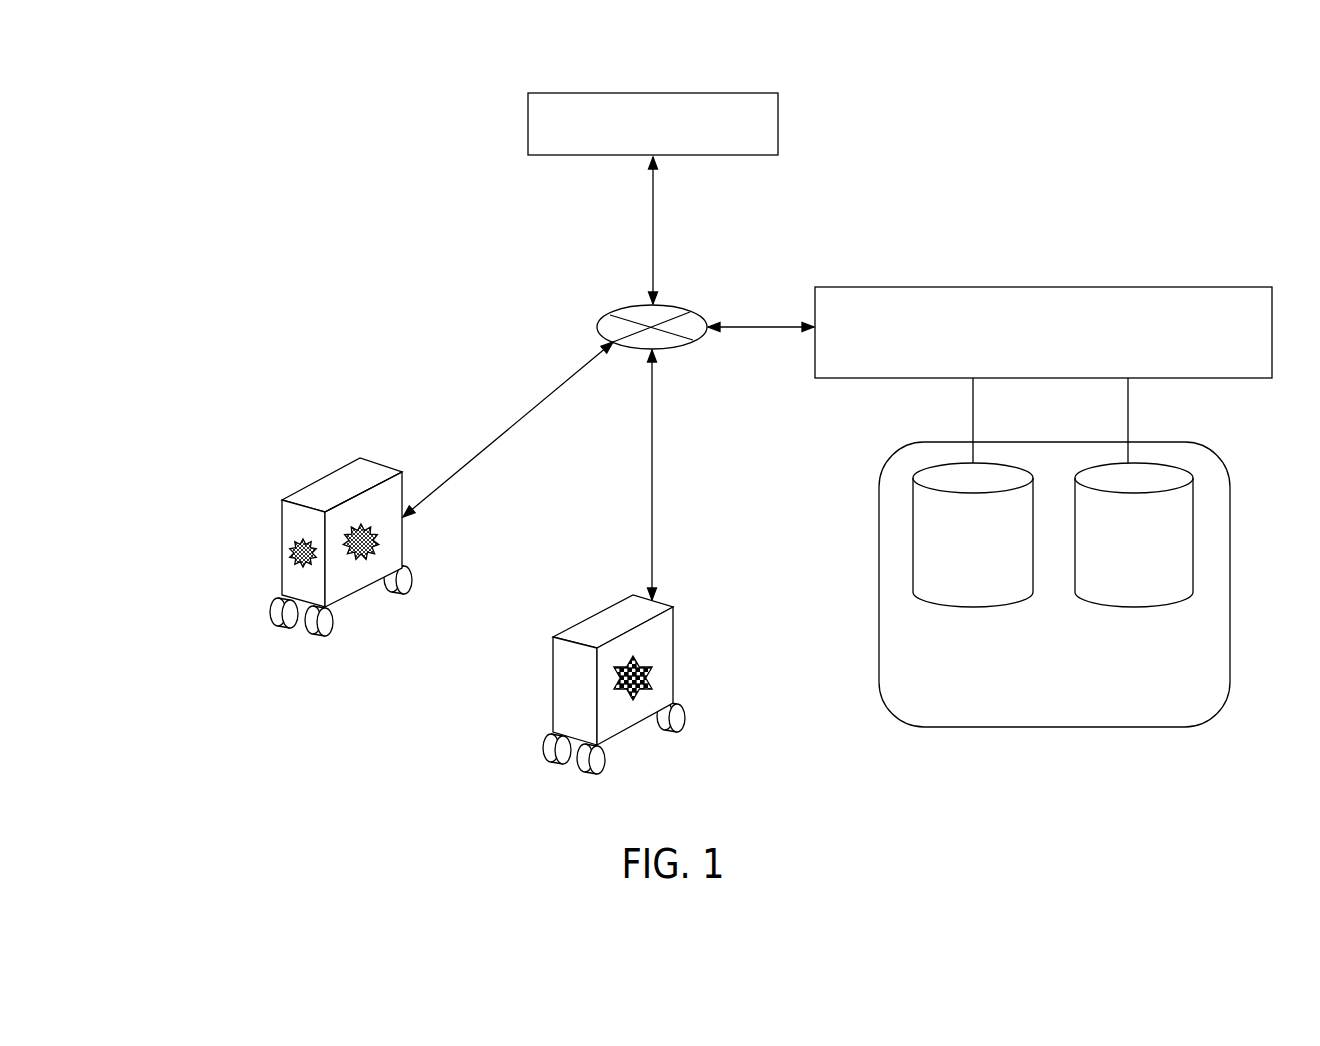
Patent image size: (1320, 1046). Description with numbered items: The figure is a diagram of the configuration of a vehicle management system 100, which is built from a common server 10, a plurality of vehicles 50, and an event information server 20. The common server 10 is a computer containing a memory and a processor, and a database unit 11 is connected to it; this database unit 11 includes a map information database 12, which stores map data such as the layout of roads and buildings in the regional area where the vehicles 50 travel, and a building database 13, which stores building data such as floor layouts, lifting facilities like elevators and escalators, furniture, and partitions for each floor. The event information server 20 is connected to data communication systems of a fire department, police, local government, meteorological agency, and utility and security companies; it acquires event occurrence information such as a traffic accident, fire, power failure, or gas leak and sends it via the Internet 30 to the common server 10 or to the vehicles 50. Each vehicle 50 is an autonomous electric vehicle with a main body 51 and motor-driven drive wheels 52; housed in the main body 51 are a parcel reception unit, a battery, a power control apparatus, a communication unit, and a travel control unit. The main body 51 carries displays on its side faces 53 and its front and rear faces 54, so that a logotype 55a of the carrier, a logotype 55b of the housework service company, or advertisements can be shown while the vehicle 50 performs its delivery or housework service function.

The vehicle management system 100 is at (278, 128).
The common server 10 is at (1033, 287).
The database unit 11 is at (1127, 727).
The map information database 12 is at (978, 462).
The building database 13 is at (1147, 462).
The event information server 20 is at (642, 93).
The Internet 30 is at (668, 305).
The vehicle 50 is at (447, 618).
The main body 51 is at (282, 528).
The drive wheels 52 is at (268, 622).
The side faces 53 is at (395, 548).
The front and rear faces 54 is at (305, 585).
The logotype of the carrier 55a is at (365, 557).
The logotype of the housework service company 55b is at (642, 690).